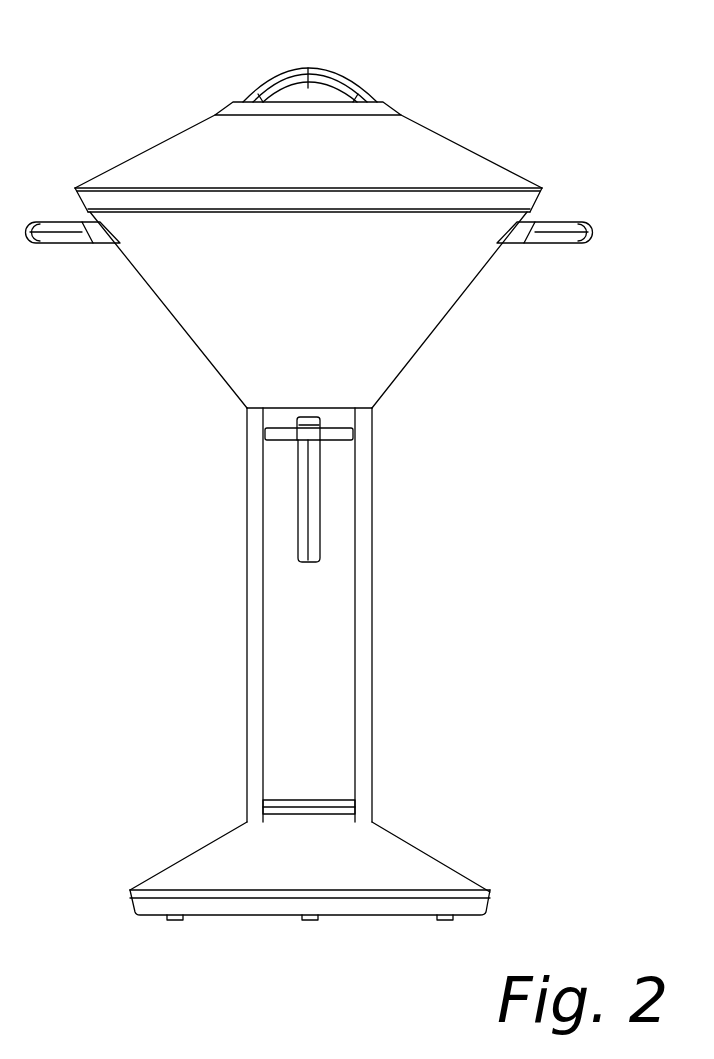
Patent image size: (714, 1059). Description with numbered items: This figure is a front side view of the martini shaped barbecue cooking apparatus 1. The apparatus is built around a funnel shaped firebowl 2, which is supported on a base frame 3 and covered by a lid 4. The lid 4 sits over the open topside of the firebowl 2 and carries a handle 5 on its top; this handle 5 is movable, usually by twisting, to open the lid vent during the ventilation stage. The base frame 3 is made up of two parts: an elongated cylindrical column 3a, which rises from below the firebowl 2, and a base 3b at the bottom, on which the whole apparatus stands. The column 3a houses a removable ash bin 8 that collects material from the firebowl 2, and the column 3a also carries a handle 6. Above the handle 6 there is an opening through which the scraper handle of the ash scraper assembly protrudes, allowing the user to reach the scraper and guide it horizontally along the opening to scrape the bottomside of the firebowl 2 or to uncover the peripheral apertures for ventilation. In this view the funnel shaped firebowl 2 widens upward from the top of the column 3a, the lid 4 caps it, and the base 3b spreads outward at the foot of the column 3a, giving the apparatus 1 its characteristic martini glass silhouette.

The barbecue cooking apparatus 1 is at (430, 587).
The firebowl 2 is at (413, 337).
The base frame 3 is at (397, 823).
The column 3a is at (248, 633).
The base 3b is at (448, 883).
The lid 4 is at (469, 154).
The handle 5 is at (343, 75).
The handle 6 is at (313, 513).
The ash bin 8 is at (337, 725).